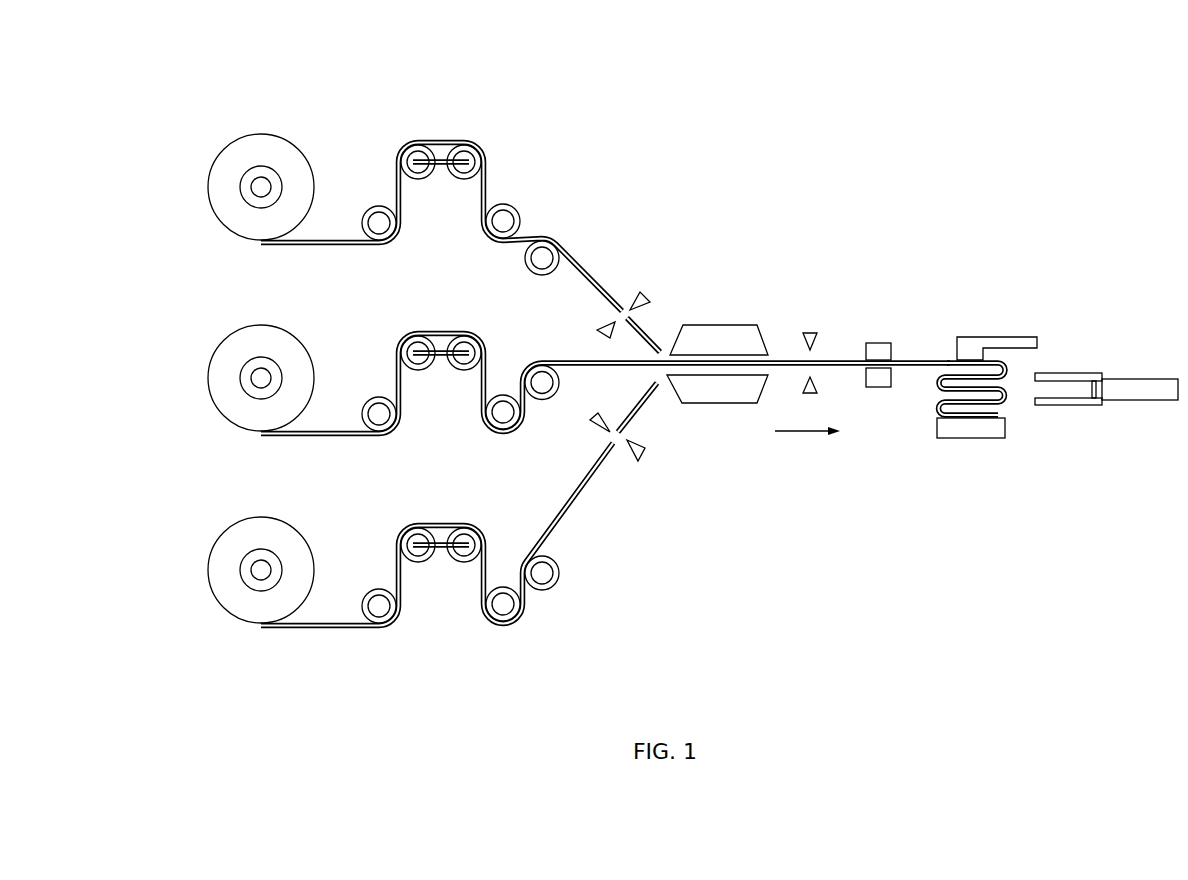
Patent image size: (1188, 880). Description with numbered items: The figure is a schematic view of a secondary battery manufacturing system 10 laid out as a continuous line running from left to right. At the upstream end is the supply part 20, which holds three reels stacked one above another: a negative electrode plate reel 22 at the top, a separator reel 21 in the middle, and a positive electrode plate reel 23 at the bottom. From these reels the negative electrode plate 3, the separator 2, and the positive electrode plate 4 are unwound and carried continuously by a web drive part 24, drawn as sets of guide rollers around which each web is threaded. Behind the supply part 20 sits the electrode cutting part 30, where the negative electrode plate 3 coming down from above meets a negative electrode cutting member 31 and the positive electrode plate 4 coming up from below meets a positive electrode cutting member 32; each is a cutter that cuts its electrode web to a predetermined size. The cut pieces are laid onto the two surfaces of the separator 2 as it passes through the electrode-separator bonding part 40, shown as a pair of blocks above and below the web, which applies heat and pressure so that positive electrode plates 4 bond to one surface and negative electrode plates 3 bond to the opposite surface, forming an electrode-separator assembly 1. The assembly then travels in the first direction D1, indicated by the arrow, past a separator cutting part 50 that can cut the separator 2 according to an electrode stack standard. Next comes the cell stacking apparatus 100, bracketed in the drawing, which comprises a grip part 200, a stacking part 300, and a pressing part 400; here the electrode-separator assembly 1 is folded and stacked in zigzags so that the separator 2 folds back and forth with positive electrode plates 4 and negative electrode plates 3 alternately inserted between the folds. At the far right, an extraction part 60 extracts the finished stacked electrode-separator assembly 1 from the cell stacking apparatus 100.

The secondary battery manufacturing system 10 is at (583, 54).
The supply part 20 is at (241, 101).
The separator reel 21 is at (211, 380).
The negative electrode plate reel 22 is at (211, 189).
The positive electrode plate reel 23 is at (211, 572).
The web drive part 24 is at (526, 172).
The electrode-separator assembly 1 is at (836, 357).
The separator 2 is at (330, 437).
The negative electrode plate 3 is at (330, 246).
The positive electrode plate 4 is at (330, 629).
The electrode cutting part 30 is at (655, 212).
The negative electrode cutting member 31 is at (639, 289).
The positive electrode cutting member 32 is at (641, 456).
The electrode-separator bonding part 40 is at (726, 302).
The separator cutting part 50 is at (808, 331).
The extraction part 60 is at (1140, 384).
The cell stacking apparatus 100 is at (1055, 283).
The grip part 200 is at (876, 344).
The stacking part 300 is at (1002, 426).
The pressing part 400 is at (966, 345).
The first direction D1 is at (800, 434).